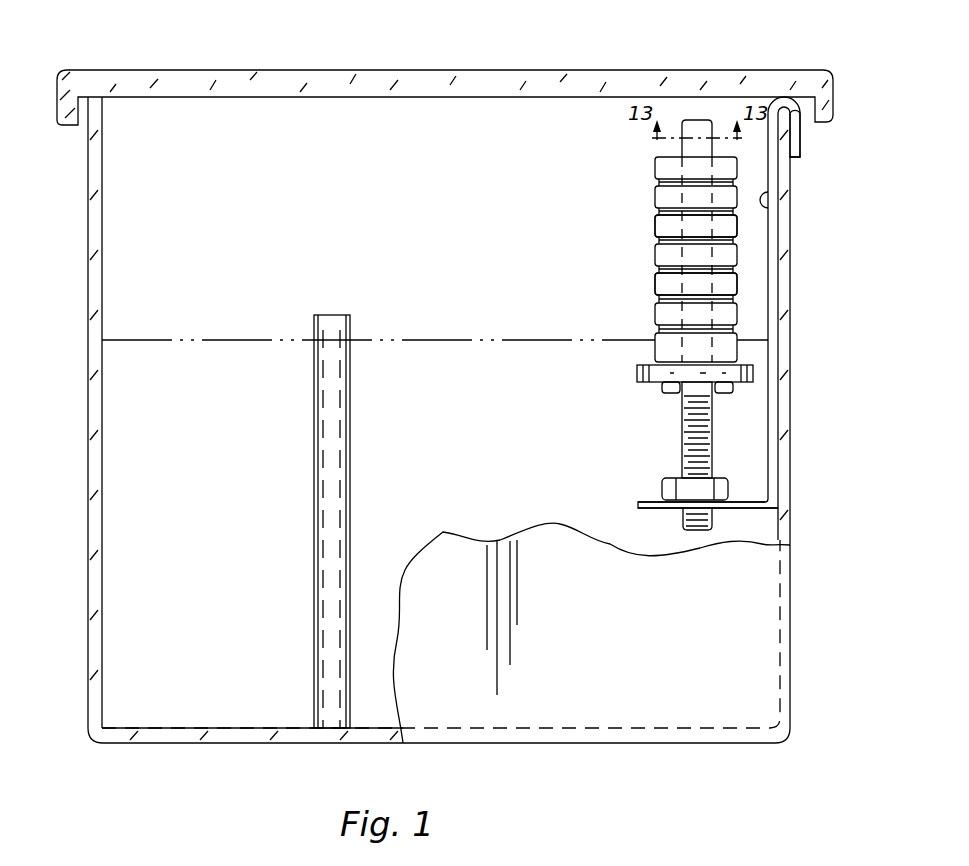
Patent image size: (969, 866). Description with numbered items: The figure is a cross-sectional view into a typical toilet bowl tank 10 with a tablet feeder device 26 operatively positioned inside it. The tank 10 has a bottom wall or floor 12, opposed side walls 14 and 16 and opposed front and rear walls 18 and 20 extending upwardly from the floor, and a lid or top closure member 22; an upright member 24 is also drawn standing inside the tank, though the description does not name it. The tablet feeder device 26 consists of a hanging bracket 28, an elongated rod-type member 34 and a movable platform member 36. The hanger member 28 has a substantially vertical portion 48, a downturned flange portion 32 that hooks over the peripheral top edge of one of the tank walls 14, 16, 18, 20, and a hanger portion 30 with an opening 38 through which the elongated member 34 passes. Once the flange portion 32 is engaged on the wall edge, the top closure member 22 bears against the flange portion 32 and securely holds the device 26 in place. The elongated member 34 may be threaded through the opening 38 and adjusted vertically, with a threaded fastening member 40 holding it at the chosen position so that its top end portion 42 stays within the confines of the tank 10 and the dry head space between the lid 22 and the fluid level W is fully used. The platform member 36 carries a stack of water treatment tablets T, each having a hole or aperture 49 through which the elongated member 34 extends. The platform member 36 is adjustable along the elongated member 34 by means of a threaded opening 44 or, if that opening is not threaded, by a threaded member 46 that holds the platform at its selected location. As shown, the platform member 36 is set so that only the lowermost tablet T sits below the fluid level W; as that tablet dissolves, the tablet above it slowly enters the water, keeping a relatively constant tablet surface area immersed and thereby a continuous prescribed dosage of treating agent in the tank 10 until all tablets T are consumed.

The toilet bowl tank 10 is at (752, 36).
The bottom wall 12 is at (200, 728).
The side wall 14 is at (88, 505).
The side wall 16 is at (791, 627).
The front wall 18 is at (650, 700).
The rear wall 20 is at (230, 164).
The lid 22 is at (199, 72).
The fill pipe 24 is at (315, 575).
The tablet feeder device 26 is at (600, 170).
The hanging bracket 28 is at (780, 258).
The hanger portion 30 is at (742, 510).
The downturned flange portion 32 is at (802, 140).
The elongated member 34 is at (713, 440).
The platform member 36 is at (637, 368).
The opening 38 is at (683, 520).
The fastening member 40 is at (660, 488).
The top end portion 42 is at (697, 120).
The threaded opening 44 is at (745, 352).
The threaded member 46 is at (735, 392).
The vertical portion 48 is at (762, 200).
The aperture 49 is at (682, 230).
The water treatment tablets T is at (655, 283).
The fluid level W is at (195, 428).